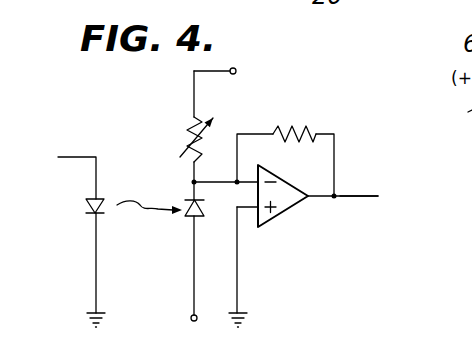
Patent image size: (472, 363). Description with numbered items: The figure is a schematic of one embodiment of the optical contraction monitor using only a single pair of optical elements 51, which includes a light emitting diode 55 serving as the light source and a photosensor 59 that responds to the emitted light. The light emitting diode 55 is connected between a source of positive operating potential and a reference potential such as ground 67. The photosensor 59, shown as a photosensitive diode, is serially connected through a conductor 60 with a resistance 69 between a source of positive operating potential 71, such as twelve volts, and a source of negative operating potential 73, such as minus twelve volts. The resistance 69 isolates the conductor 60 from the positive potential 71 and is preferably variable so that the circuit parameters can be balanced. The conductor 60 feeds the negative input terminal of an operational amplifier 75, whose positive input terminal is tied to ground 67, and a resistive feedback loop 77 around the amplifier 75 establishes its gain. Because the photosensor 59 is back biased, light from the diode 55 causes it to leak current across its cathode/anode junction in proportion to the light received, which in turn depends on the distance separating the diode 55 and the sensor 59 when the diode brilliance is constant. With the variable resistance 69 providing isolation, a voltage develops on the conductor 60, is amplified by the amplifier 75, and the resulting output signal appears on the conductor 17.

The conductor 17 is at (362, 196).
The first pair of optical elements 51 is at (87, 194).
The light emitting diode 55 is at (85, 206).
The photosensor 59 is at (191, 218).
The conductor 60 is at (193, 171).
The ground 67 is at (88, 313).
The resistance 69 is at (186, 132).
The source of positive operating potential 71 is at (269, 60).
The source of negative operating potential 73 is at (185, 314).
The operational amplifier 75 is at (277, 167).
The resistive feedback loop 77 is at (298, 118).